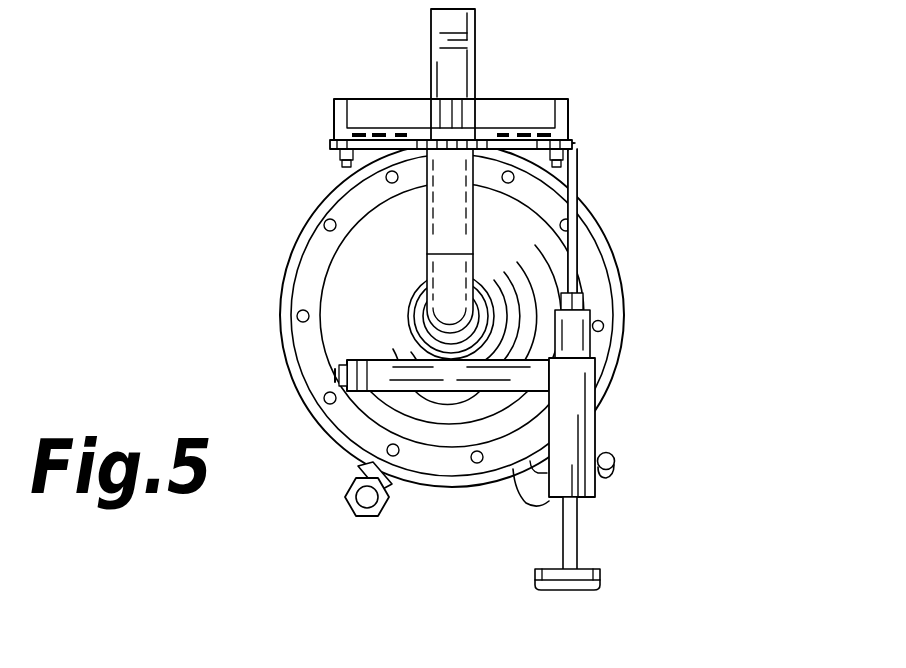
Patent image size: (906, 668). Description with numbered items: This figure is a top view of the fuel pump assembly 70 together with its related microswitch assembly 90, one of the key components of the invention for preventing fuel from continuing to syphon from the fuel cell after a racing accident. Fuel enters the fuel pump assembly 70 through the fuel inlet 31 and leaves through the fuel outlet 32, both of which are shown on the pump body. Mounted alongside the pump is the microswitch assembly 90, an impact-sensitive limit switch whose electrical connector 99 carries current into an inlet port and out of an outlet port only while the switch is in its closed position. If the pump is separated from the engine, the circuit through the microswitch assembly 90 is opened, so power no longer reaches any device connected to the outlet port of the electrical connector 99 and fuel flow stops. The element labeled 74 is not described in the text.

The fuel pump assembly 70 is at (632, 255).
The nozzle arm 74 is at (434, 392).
The microswitch assembly 90 is at (606, 424).
The fuel outlet 32 is at (613, 466).
The electrical connector 99 is at (601, 577).
The fuel inlet 31 is at (356, 518).